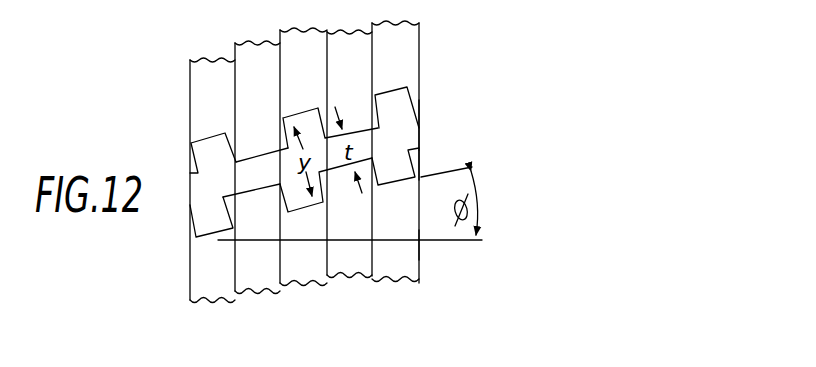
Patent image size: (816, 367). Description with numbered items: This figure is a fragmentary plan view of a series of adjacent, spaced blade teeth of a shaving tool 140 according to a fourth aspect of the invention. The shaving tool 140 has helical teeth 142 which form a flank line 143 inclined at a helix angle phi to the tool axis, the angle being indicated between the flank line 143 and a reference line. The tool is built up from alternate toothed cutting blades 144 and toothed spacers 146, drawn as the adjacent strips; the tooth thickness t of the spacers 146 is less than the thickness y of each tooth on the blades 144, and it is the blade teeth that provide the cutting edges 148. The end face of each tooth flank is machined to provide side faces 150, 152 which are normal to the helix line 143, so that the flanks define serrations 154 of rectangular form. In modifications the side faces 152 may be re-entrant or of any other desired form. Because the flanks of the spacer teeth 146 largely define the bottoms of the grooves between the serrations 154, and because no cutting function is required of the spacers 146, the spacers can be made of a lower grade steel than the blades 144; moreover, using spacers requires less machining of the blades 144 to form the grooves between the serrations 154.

The shaving tool 140 is at (352, 165).
The helical teeth 142 is at (422, 127).
The flank line 143 is at (471, 168).
The toothed cutting blades 144 is at (262, 13).
The toothed spacers 146 is at (347, 32).
The cutting edges 148 is at (235, 226).
The side face 150 is at (419, 158).
The side face 152 is at (403, 88).
The serrations 154 is at (417, 245).